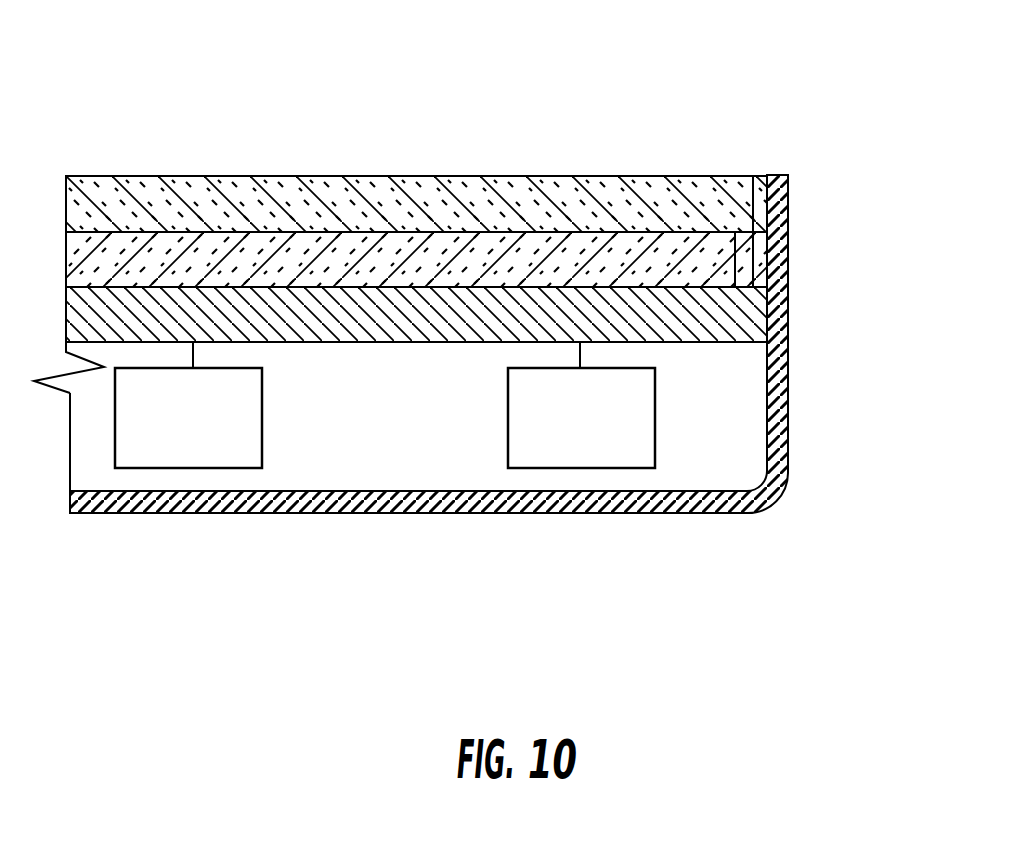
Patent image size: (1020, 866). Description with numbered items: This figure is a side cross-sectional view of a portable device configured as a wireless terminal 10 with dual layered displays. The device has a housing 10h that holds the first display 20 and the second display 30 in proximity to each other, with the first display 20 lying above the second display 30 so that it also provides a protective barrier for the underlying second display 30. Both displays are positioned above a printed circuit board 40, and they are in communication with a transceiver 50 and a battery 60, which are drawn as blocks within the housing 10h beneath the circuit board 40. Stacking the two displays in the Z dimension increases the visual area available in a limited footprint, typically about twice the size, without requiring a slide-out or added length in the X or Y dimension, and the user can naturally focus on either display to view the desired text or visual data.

The wireless terminal device 10 is at (650, 100).
The housing 10h is at (778, 488).
The first display 20 is at (788, 198).
The second display 30 is at (788, 262).
The printed circuit board 40 is at (788, 312).
The transceiver 50 is at (596, 450).
The battery 60 is at (202, 450).